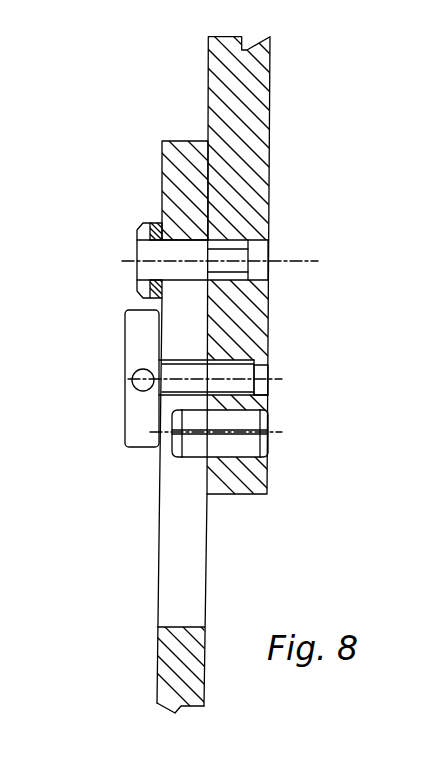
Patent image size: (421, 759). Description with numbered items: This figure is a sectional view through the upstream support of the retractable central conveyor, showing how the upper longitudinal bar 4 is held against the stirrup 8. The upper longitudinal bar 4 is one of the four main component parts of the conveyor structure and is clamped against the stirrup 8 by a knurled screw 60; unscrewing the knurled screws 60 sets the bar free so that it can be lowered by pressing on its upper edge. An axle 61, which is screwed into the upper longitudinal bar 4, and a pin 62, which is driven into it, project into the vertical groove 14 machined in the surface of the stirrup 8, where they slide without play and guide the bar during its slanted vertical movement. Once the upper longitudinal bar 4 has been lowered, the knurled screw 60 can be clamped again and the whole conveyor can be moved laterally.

The upper longitudinal bar 4 is at (232, 99).
The stirrup 8 is at (185, 183).
The axle 61 is at (160, 250).
The knurled screw 60 is at (145, 337).
The pin 62 is at (196, 447).
The vertical groove 14 is at (180, 537).